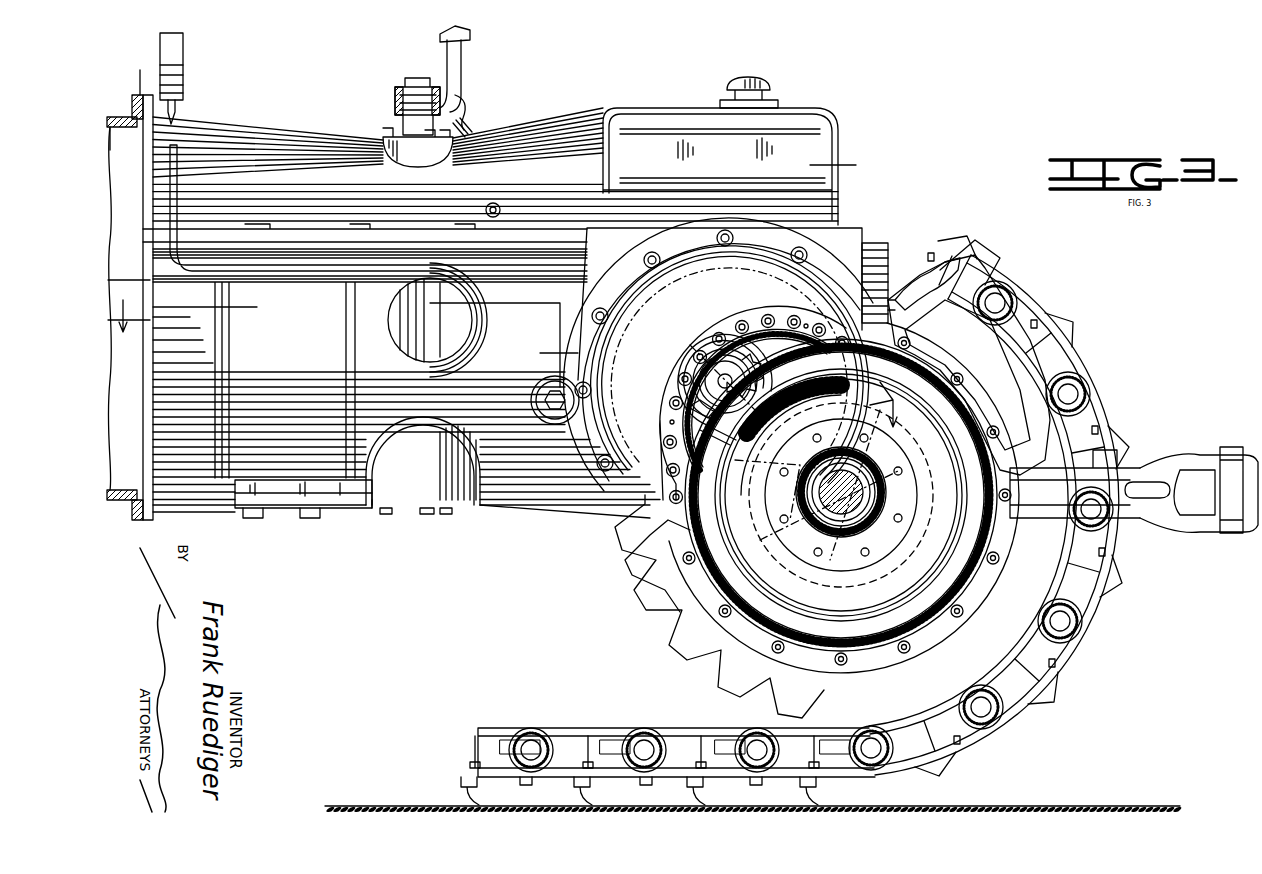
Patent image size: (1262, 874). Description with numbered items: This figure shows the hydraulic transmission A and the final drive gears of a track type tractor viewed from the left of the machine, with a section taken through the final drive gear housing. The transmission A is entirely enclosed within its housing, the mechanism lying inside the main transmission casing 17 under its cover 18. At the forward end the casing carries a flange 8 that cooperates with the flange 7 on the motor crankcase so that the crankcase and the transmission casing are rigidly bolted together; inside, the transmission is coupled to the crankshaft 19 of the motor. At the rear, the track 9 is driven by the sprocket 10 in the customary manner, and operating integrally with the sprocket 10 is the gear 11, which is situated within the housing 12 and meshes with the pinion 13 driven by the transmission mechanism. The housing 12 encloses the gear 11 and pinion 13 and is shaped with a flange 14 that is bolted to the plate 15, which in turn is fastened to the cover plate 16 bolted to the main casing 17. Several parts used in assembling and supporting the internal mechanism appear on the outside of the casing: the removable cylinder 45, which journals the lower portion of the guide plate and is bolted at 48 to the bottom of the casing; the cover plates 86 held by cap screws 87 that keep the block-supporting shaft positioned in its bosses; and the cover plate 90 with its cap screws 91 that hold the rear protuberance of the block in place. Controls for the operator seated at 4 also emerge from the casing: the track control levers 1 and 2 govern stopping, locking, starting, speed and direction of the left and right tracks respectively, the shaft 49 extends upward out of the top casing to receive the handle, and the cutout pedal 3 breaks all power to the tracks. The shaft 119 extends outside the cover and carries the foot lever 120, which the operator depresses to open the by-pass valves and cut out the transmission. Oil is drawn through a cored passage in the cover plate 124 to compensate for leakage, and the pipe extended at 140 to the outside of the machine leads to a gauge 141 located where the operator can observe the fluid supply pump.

The track control lever 1 is at (462, 78).
The track control lever 2 is at (470, 40).
The cutout pedal 3 is at (472, 134).
The operator's seat position 4 is at (502, 277).
The crankcase flange 7 is at (126, 96).
The transmission casing flange 8 is at (150, 472).
The track 9 is at (588, 738).
The sprocket 10 is at (710, 680).
The gear 11 is at (834, 495).
The housing 12 is at (665, 528).
The pinion 13 is at (698, 412).
The flange 14 is at (948, 345).
The plate 15 is at (808, 322).
The cover plate 16 is at (664, 343).
The main transmission casing 17 is at (536, 343).
The cover 18 is at (588, 176).
The crankshaft 19 is at (130, 307).
The removable cylinder 45 is at (400, 508).
The bolted connection 48 is at (428, 510).
The shaft 49 is at (395, 110).
The cover plate 86 is at (556, 376).
The cap screws 87 is at (712, 390).
The cover plate 90 is at (895, 255).
The cap screws 91 is at (922, 262).
The shaft 119 is at (494, 203).
The foot lever 120 is at (466, 105).
The cover plate 124 is at (322, 508).
The extended pipe 140 is at (303, 274).
The gauge 141 is at (183, 53).
The transmission A is at (842, 166).